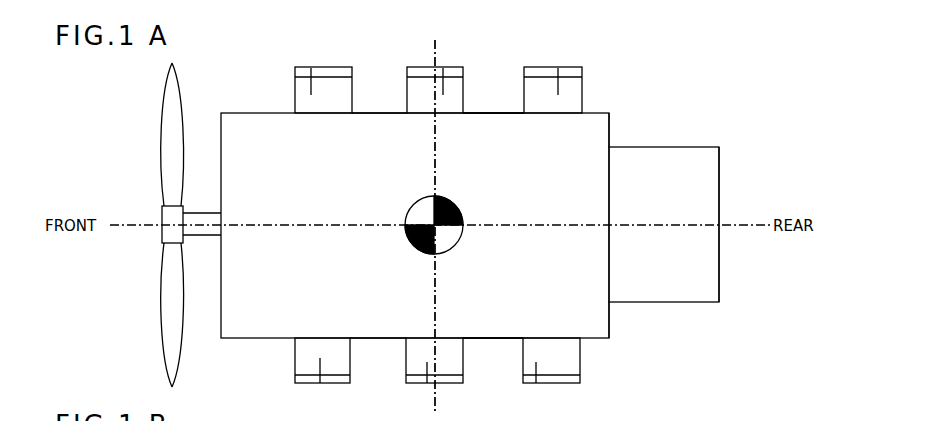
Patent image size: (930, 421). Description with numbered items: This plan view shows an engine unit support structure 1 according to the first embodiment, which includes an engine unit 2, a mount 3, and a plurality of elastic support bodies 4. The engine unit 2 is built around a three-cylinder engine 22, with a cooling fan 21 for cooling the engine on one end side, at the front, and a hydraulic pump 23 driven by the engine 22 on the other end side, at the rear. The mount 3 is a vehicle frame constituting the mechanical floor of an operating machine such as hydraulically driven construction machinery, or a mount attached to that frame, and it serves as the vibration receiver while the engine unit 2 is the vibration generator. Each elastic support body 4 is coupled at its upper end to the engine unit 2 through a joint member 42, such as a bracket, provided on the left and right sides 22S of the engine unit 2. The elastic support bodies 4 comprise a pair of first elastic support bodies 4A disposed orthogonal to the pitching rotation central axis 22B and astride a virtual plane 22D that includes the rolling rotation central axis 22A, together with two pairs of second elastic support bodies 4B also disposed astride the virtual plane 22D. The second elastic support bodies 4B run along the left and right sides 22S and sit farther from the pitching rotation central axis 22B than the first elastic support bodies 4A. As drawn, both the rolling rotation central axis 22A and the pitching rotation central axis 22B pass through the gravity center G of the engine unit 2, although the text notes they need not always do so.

The engine unit support structure 1 is at (719, 165).
The engine unit 2 is at (501, 200).
The cooling fan 21 is at (162, 114).
The engine 22 is at (611, 122).
The rolling rotation central axis 22A is at (731, 224).
The pitching rotation central axis 22B is at (434, 53).
The virtual plane 22D is at (515, 224).
The left and right sides 22S is at (510, 112).
The hydraulic pump 23 is at (665, 147).
The mount 3 is at (437, 390).
The elastic support bodies 4 is at (449, 212).
The first elastic support bodies 4A is at (453, 68).
The second elastic support bodies 4B is at (294, 70).
The joint member 42 is at (312, 70).
The gravity center G is at (428, 218).